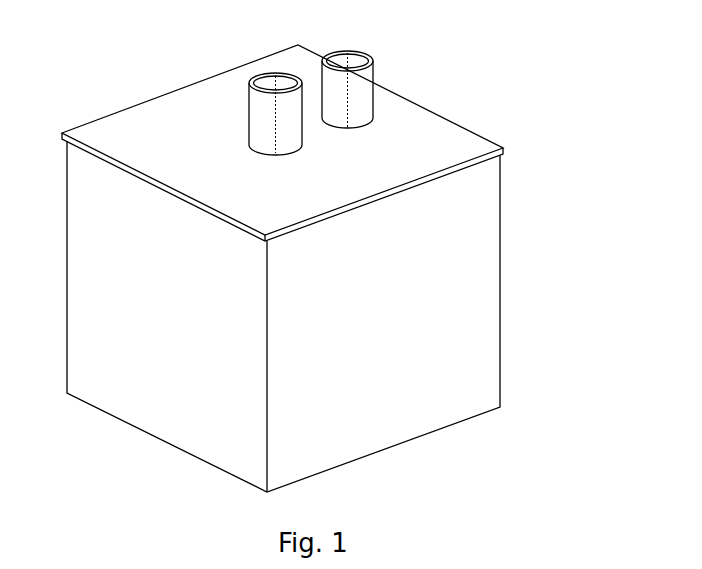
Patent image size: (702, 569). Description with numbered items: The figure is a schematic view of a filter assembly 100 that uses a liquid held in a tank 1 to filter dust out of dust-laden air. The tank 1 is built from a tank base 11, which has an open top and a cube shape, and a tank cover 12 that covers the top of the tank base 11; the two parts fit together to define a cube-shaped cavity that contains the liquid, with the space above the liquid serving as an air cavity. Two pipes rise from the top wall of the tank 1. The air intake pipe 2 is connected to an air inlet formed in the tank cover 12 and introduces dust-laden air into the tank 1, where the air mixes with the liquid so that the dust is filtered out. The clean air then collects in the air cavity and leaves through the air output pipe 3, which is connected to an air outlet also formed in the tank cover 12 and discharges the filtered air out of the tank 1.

The filter assembly 100 is at (112, 59).
The tank 1 is at (508, 73).
The tank base 11 is at (482, 192).
The tank cover 12 is at (452, 133).
The air intake pipe 2 is at (262, 105).
The air output pipe 3 is at (358, 90).